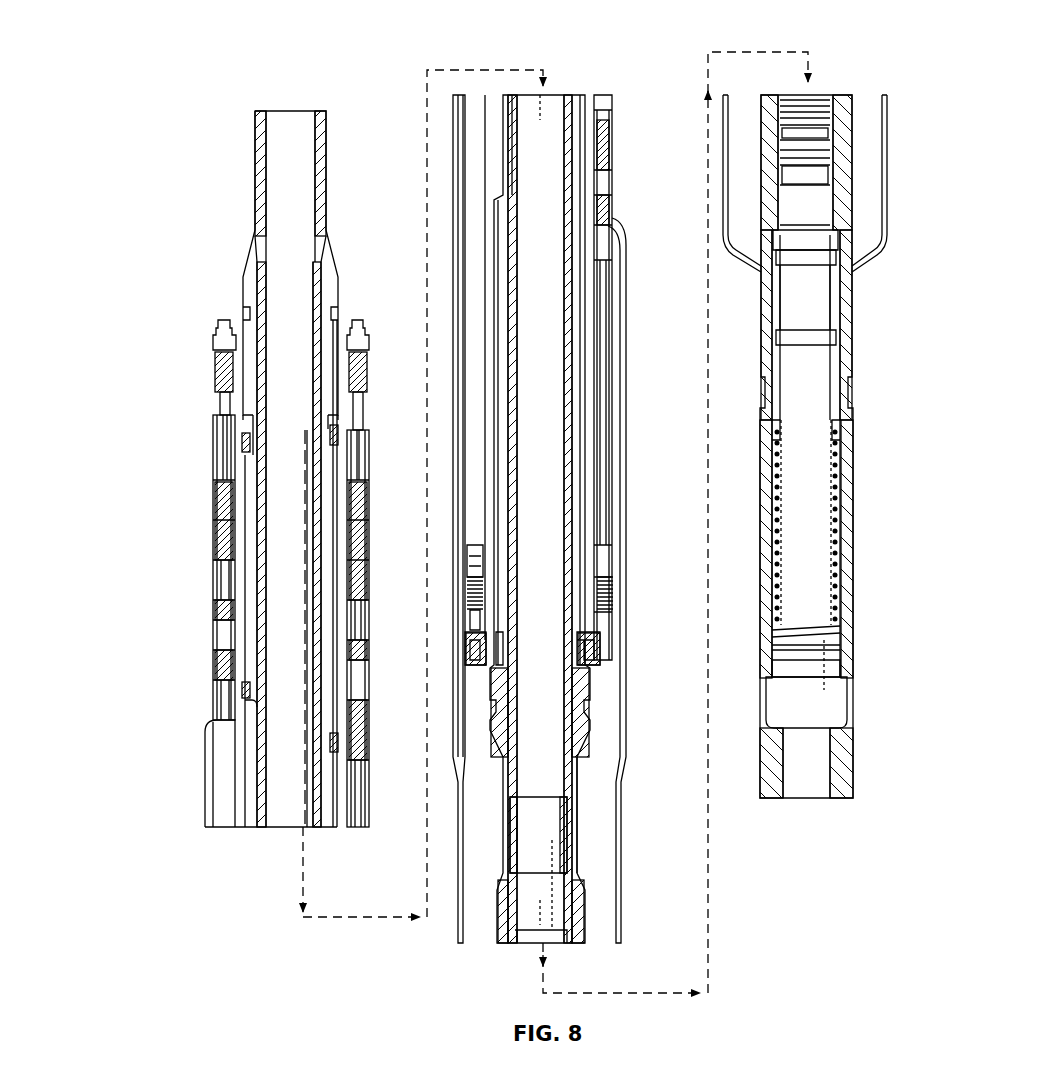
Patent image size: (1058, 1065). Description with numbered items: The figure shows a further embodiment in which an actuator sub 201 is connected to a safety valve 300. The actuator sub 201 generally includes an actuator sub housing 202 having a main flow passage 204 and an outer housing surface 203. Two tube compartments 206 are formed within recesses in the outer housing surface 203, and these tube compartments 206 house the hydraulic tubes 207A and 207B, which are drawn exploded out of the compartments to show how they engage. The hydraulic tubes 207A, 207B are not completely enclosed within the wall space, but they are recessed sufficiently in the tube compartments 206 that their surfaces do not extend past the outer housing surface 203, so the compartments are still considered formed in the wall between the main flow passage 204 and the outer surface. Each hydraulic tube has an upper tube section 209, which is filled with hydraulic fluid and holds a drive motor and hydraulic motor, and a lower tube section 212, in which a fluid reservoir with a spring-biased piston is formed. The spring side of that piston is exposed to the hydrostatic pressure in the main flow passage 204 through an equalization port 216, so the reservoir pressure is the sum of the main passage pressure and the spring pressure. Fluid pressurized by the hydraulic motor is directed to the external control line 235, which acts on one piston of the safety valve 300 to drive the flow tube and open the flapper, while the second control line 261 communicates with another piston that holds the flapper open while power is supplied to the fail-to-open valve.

The actuator sub 201 is at (148, 300).
The actuator sub housing 202 is at (241, 231).
The outer housing surface 203 is at (256, 830).
The main flow passage 204 is at (548, 107).
The tube compartment 206 is at (326, 333).
The hydraulic tube 207A is at (189, 523).
The hydraulic tube 207B is at (405, 503).
The upper tube section 209 is at (212, 567).
The lower tube section 212 is at (599, 368).
The equalization port 216 is at (578, 653).
The control line 235 is at (455, 935).
The control line 261 is at (618, 856).
The safety valve 300 is at (876, 386).